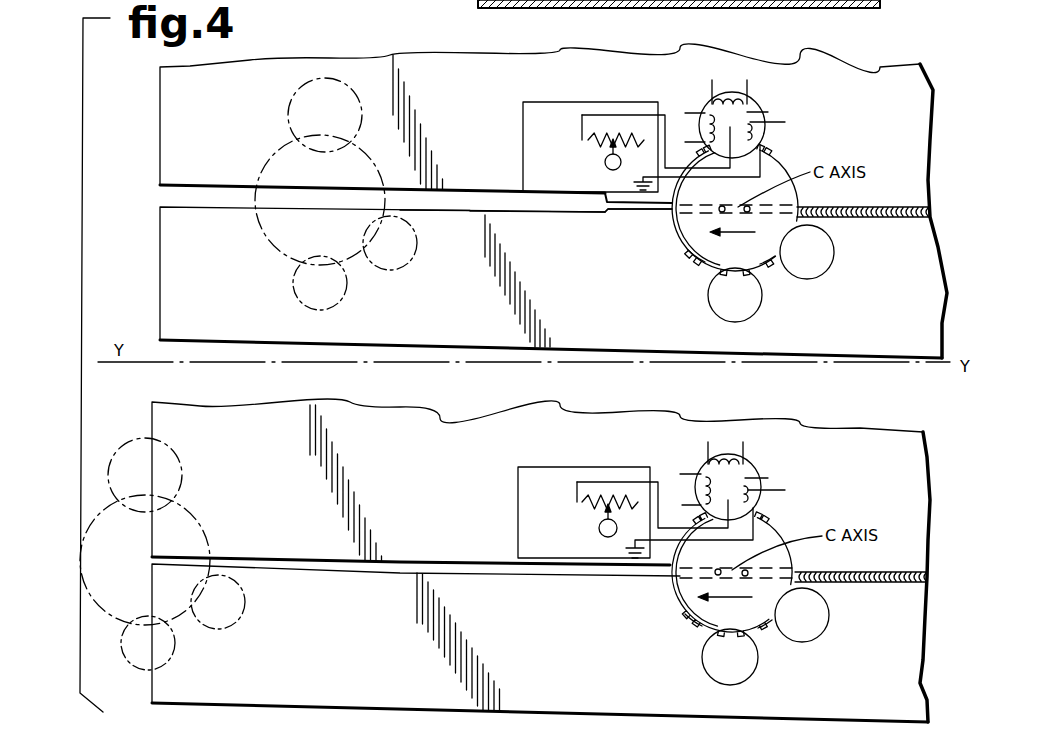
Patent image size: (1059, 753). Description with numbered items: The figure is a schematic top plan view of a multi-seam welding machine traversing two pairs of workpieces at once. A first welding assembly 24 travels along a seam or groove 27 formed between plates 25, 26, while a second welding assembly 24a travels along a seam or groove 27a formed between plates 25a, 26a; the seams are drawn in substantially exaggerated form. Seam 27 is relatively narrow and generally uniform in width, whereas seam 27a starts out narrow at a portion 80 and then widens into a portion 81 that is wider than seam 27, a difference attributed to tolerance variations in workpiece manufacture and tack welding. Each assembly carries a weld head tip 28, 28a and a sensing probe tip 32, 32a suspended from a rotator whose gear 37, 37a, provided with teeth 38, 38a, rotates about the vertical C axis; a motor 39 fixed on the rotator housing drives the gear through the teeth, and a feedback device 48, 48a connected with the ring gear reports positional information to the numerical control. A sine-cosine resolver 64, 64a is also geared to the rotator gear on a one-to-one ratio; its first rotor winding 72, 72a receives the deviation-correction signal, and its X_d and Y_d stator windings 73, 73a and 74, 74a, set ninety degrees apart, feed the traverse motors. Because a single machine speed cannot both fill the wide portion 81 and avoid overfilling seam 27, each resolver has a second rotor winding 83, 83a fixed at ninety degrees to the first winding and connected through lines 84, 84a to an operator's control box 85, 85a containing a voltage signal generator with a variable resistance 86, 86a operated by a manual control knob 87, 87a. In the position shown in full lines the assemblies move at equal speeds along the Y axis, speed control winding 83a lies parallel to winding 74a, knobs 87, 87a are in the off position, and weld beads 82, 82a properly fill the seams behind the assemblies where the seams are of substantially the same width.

The welding assembly 24 is at (205, 508).
The welding assembly 24a is at (256, 156).
The plate 25 is at (273, 657).
The plate 25a is at (224, 294).
The plate 26 is at (233, 444).
The plate 26a is at (247, 96).
The seam 27 is at (456, 563).
The seam 27a is at (520, 205).
The tip 28 is at (747, 577).
The stop pin 28a is at (749, 213).
The tip 32 is at (716, 576).
The pivot 32a is at (720, 212).
The gear 37 is at (710, 617).
The gear segment 37a is at (706, 262).
The teeth 38 is at (765, 634).
The gear segment 38a is at (762, 270).
The motor 39 is at (723, 320).
The feedback device 48 is at (824, 624).
The roller 48a is at (833, 246).
The resolver 64 is at (760, 462).
The resolver 64a is at (762, 100).
The first rotor winding 72 is at (768, 478).
The coil 72a is at (768, 112).
The X_d stator winding 73 is at (700, 488).
The coil 73a is at (703, 125).
The Y_d stator winding 74 is at (720, 455).
The Y_d motor winding 74a is at (725, 93).
The narrow portion 80 is at (620, 216).
The wide seam portion 81 is at (427, 212).
The weld bead 82 is at (877, 573).
The weld bead 82a is at (913, 203).
The second rotor winding 83 is at (785, 490).
The speed control winding 83a is at (785, 122).
The lines 84 is at (672, 551).
The ring gear 84a is at (668, 183).
The operator's control box 85 is at (517, 498).
The control circuit 85a is at (522, 106).
The variable resistance 86 is at (601, 497).
The potentiometer 86a is at (611, 136).
The manual control knob 87 is at (607, 540).
The knob 87a is at (604, 161).